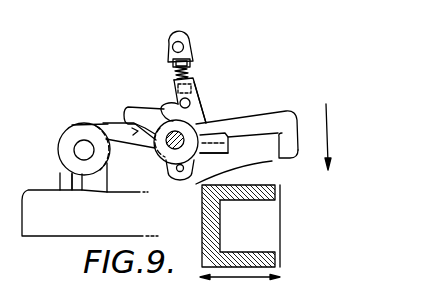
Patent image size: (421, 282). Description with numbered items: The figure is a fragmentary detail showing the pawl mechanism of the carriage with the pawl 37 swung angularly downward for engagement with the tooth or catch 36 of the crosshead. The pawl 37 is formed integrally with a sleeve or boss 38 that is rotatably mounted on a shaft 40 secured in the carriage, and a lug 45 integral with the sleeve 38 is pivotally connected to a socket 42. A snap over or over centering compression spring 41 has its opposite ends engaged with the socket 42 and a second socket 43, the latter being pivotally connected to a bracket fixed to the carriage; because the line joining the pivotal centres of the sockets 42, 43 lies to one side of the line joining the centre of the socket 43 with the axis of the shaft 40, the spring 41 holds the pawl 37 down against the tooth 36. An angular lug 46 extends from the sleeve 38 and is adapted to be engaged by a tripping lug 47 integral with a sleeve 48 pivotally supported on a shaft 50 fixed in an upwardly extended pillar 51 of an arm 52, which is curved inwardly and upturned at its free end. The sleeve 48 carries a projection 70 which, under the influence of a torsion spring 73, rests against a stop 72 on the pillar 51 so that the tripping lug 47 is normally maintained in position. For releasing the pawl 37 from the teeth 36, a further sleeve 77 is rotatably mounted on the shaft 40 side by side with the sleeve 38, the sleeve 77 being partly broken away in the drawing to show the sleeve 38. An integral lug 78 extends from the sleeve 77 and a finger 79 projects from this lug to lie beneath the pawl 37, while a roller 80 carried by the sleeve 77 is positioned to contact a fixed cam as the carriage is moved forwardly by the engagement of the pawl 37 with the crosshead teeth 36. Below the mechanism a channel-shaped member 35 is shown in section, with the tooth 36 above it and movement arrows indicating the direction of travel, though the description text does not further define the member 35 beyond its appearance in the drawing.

The channel member 35 is at (278, 205).
The tooth 36 is at (274, 160).
The pawl 37 is at (295, 148).
The sleeve or boss 38 is at (168, 104).
The shaft 40 is at (171, 145).
The snap over compression spring 41 is at (189, 74).
The socket 42 is at (196, 95).
The socket 43 is at (190, 49).
The lug 45 is at (198, 108).
The angular lug 46 is at (145, 110).
The tripping lug 47 is at (118, 126).
The sleeve 48 is at (77, 125).
The shaft 50 is at (80, 147).
The pillar 51 is at (103, 178).
The arm 52 is at (32, 190).
The projection 70 is at (78, 190).
The stop 72 is at (64, 190).
The torsion spring 73 is at (60, 152).
The sleeve 77 is at (158, 149).
The lug 78 is at (217, 139).
The finger 79 is at (228, 151).
The roller 80 is at (181, 179).